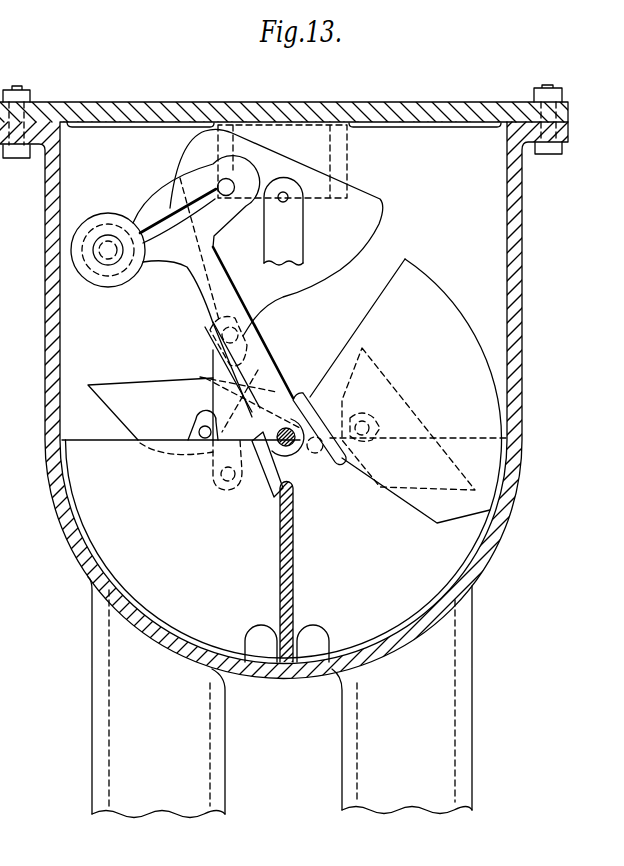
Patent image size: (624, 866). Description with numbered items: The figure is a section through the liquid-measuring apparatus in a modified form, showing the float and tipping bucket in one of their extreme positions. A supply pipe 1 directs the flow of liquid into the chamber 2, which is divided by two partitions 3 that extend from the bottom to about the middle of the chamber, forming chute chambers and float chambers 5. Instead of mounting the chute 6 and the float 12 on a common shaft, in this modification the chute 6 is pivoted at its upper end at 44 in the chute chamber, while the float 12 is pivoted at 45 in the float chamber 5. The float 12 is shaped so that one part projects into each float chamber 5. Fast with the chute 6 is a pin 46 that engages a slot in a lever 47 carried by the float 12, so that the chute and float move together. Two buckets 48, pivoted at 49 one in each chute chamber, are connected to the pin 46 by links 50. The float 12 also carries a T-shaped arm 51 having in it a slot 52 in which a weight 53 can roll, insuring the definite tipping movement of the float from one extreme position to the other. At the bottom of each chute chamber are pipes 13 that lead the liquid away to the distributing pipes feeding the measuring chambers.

The supply pipe 1 is at (277, 131).
The chamber 2 is at (522, 240).
The partition 3 is at (80, 437).
The float chamber 5 is at (386, 584).
The chute 6 is at (381, 213).
The float 12 is at (447, 295).
The pipe 13 is at (123, 738).
The pivot of the chute 44 is at (289, 203).
The pivot of the float 45 is at (289, 447).
The pin 46 is at (220, 333).
The lever 47 is at (253, 347).
The bucket 48 is at (138, 389).
The pivot of the bucket 49 is at (192, 438).
The link 50 is at (215, 396).
The T-shaped arm 51 is at (223, 274).
The slot 52 is at (177, 207).
The weight 53 is at (110, 287).